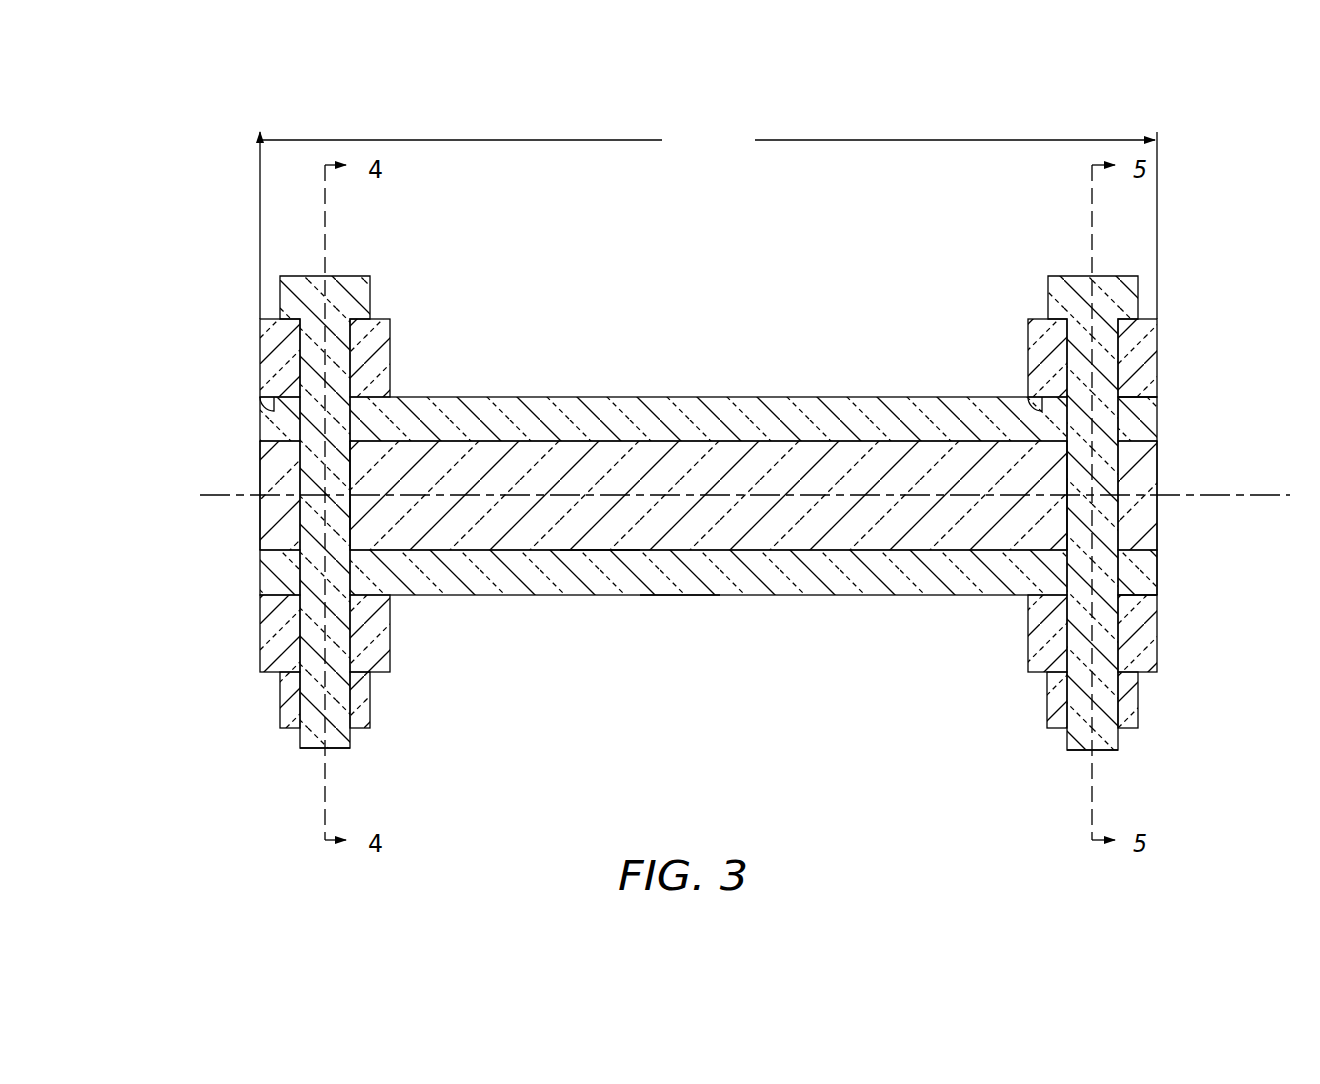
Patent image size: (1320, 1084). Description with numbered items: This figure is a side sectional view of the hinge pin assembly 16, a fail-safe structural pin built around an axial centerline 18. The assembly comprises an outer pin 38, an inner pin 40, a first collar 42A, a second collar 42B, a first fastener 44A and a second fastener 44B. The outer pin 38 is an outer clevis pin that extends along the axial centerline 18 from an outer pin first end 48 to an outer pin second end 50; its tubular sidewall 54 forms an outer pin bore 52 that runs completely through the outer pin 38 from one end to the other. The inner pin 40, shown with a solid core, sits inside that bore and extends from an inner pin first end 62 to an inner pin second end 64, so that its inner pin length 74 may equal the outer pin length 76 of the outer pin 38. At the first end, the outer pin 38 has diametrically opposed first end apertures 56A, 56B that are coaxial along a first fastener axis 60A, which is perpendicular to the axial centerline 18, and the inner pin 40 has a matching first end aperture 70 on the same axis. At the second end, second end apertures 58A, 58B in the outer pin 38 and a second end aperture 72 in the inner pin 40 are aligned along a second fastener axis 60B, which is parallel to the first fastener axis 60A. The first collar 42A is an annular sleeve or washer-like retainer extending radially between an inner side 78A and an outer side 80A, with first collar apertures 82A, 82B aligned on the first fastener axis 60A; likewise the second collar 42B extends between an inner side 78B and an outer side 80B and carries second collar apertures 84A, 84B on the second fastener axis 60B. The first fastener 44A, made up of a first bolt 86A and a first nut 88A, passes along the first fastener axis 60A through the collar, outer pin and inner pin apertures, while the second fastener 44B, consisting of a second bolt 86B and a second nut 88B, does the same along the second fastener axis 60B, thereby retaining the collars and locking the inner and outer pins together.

The hinge pin assembly 16 is at (185, 178).
The axial centerline 18 is at (1282, 494).
The outer pin 38 is at (258, 423).
The inner pin 40 is at (258, 470).
The first collar 42A is at (258, 358).
The second collar 42B is at (1160, 368).
The first fastener 44A is at (278, 750).
The second fastener 44B is at (1128, 748).
The outer pin first end 48 is at (262, 572).
The outer pin second end 50 is at (1160, 575).
The outer pin bore 52 is at (592, 552).
The tubular sidewall 54 is at (675, 592).
The first end aperture 56A is at (360, 418).
The first end aperture 56B is at (370, 575).
The second end aperture 58A is at (1157, 418).
The second end aperture 58B is at (1157, 590).
The first fastener axis 60A is at (330, 772).
The second fastener axis 60B is at (1088, 770).
The inner pin first end 62 is at (262, 522).
The inner pin second end 64 is at (1160, 532).
The first end aperture 70 is at (355, 476).
The second end aperture 72 is at (1062, 460).
The inner pin length 74 is at (501, 223).
The outer pin length 76 is at (916, 224).
The inner side 78A is at (262, 414).
The inner side 78B is at (1040, 408).
The outer side 80A is at (268, 321).
The outer side 80B is at (1043, 312).
The first collar aperture 82A is at (355, 352).
The first collar aperture 82B is at (355, 642).
The second collar aperture 84A is at (1157, 348).
The second collar aperture 84B is at (1157, 650).
The first bolt 86A is at (377, 274).
The second bolt 86B is at (1052, 268).
The first nut 88A is at (370, 697).
The second nut 88B is at (1047, 698).